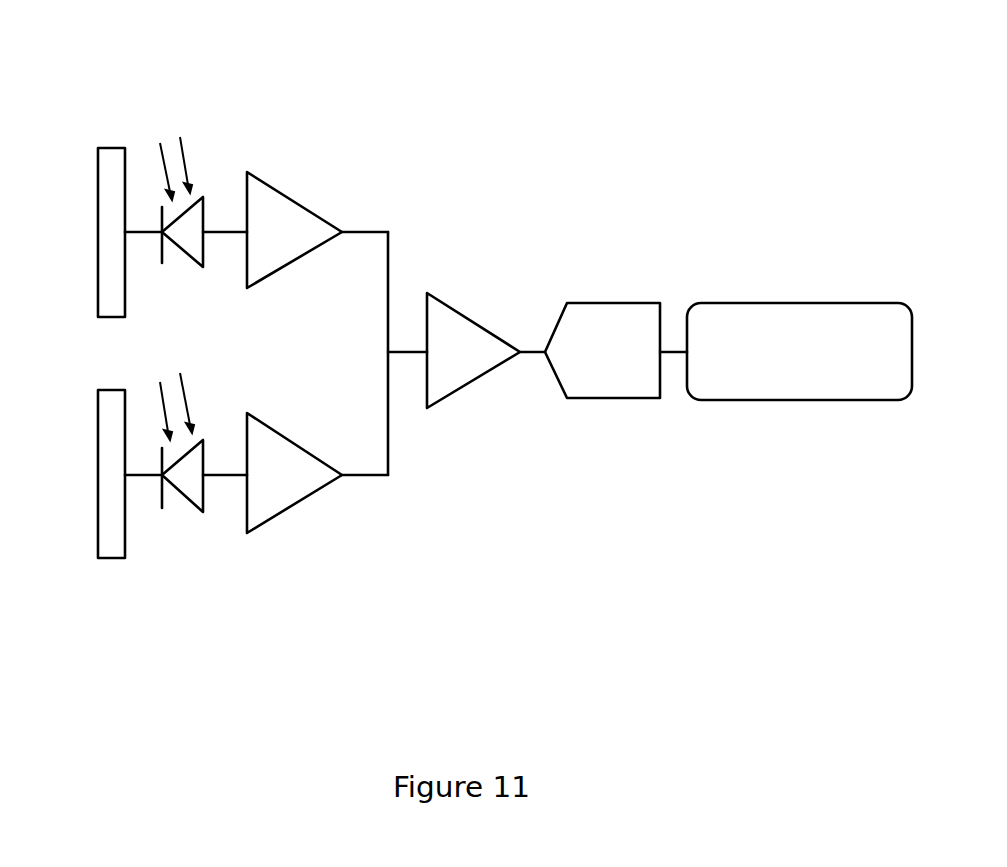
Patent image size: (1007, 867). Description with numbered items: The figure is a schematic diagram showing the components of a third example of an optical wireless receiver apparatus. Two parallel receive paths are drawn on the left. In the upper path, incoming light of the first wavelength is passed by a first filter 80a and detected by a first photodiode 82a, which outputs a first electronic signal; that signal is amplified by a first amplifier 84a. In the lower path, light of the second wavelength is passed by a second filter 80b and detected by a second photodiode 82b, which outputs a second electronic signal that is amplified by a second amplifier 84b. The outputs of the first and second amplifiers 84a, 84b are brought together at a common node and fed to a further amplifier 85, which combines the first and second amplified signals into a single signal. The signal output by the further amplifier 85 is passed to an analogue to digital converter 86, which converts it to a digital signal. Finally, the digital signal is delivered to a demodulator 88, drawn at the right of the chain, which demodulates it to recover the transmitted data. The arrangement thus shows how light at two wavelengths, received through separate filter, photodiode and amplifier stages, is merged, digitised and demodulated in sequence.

The first filter 80a is at (95, 133).
The first photodiode 82a is at (190, 130).
The first amplifier 84a is at (322, 130).
The second filter 80b is at (87, 578).
The second photodiode 82b is at (200, 578).
The second amplifier 84b is at (303, 578).
The further amplifier 85 is at (475, 282).
The analogue to digital converter 86 is at (620, 440).
The demodulator 88 is at (810, 443).